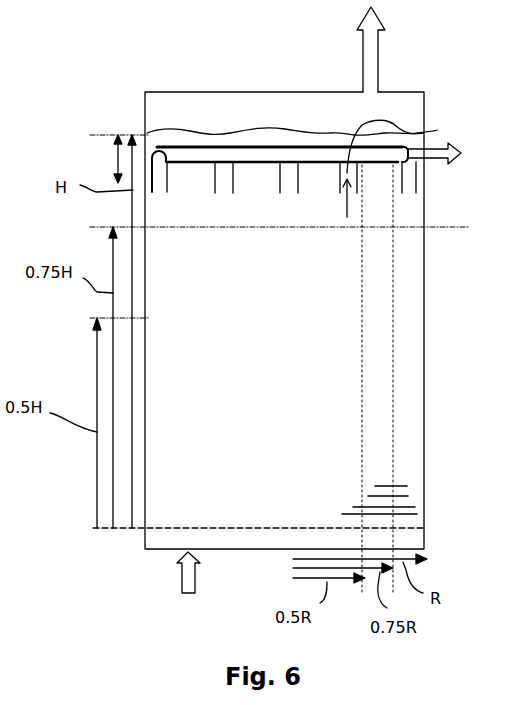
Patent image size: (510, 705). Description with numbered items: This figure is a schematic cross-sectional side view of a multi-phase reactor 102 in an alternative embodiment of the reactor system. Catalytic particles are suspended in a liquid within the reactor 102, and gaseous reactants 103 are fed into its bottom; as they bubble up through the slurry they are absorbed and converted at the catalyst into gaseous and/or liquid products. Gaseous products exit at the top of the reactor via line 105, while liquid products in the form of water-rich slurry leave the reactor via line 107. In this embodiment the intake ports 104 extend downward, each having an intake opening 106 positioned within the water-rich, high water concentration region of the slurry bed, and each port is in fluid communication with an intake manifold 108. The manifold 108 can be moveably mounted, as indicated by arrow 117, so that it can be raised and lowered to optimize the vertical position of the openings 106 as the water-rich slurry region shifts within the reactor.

The multi-phase reactor 102 is at (295, 385).
The gaseous reactants 103 is at (182, 575).
The intake ports 104 is at (428, 134).
The line 105 is at (360, 48).
The intake opening 106 is at (292, 184).
The line 107 is at (440, 165).
The intake manifold 108 is at (187, 158).
The arrow 117 is at (108, 157).